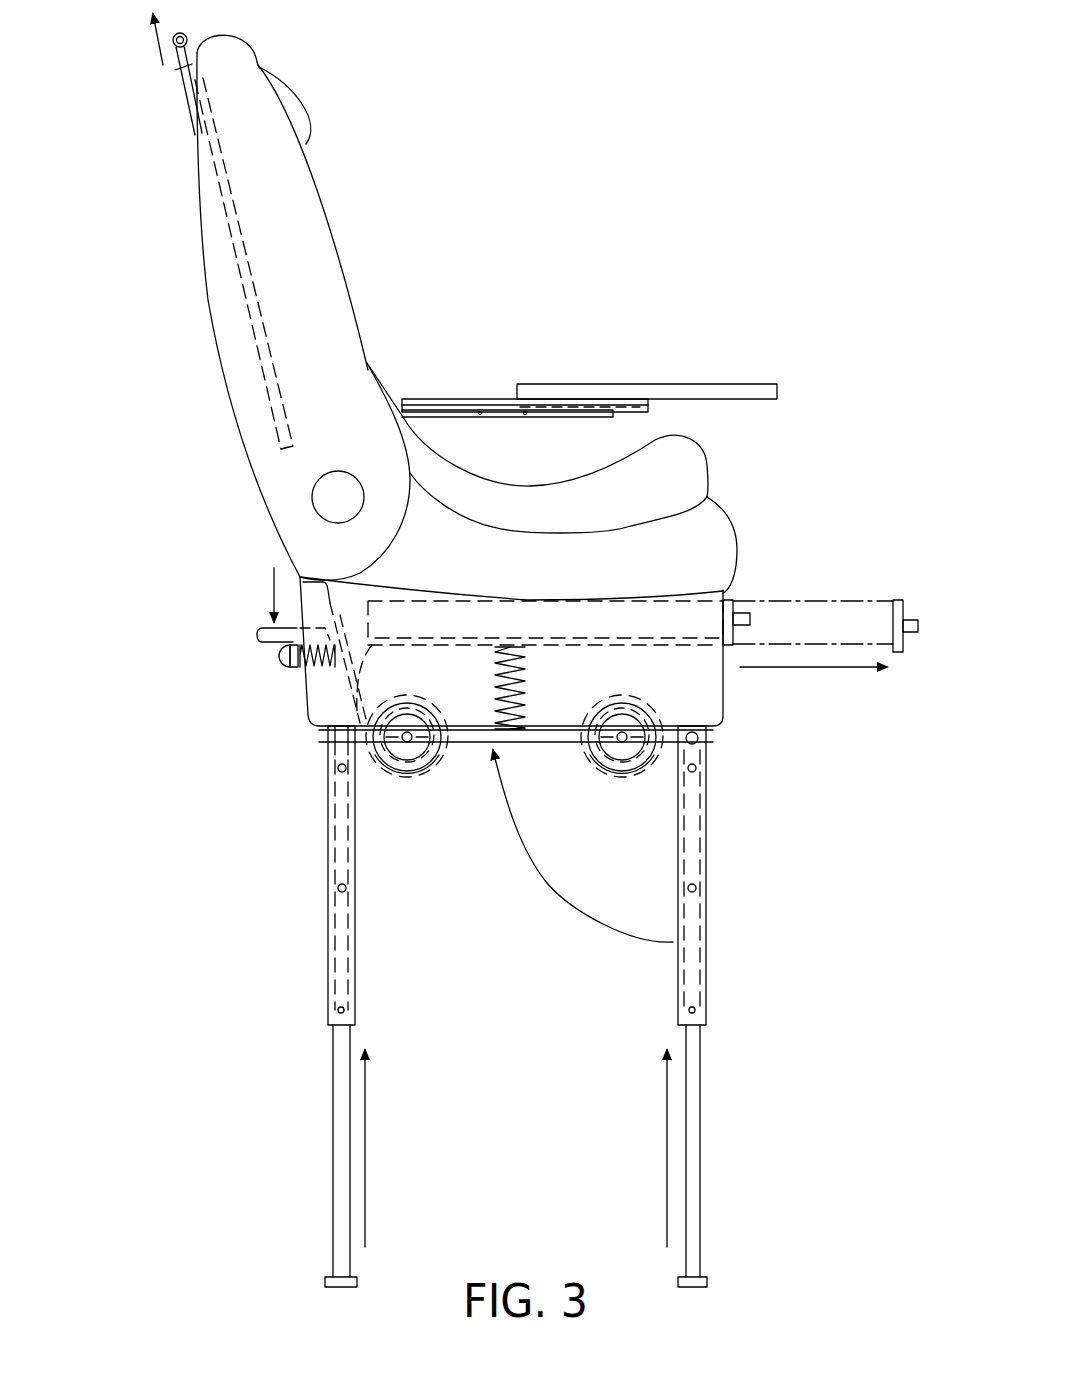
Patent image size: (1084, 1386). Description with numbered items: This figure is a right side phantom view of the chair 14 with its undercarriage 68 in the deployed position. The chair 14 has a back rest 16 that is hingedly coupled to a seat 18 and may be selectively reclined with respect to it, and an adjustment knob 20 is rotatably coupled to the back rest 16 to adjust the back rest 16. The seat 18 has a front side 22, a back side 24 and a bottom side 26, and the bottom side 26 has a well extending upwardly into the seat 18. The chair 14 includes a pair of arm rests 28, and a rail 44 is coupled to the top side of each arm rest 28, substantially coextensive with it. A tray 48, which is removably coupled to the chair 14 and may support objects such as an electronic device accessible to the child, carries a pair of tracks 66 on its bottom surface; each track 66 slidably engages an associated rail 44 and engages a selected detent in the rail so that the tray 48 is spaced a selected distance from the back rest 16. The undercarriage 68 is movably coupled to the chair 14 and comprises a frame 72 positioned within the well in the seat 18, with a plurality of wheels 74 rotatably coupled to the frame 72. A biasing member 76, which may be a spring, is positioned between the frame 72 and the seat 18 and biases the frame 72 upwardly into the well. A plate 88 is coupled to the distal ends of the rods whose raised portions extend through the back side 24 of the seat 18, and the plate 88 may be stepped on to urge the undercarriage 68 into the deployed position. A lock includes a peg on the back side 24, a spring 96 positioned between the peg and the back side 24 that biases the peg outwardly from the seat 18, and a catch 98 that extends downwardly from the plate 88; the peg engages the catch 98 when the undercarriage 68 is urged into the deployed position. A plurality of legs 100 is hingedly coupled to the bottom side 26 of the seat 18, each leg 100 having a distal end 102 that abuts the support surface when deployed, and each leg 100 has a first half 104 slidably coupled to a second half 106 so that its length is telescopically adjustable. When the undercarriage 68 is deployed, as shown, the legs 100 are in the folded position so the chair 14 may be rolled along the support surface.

The chair 14 is at (460, 143).
The back rest 16 is at (204, 258).
The seat 18 is at (723, 673).
The adjustment knob 20 is at (338, 497).
The front side 22 is at (720, 698).
The back side 24 is at (310, 720).
The bottom side 26 is at (473, 742).
The arm rests 28 is at (713, 448).
The rails 44 is at (440, 398).
The tray 48 is at (742, 385).
The tracks 66 is at (630, 400).
The undercarriage 68 is at (380, 793).
The frame 72 is at (530, 743).
The wheels 74 is at (408, 773).
The biasing member 76 is at (498, 682).
The plate 88 is at (262, 630).
The spring 96 is at (320, 667).
The catch 98 is at (288, 668).
The legs 100 is at (680, 1000).
The distal end 102 is at (345, 1263).
The first half 104 is at (330, 957).
The second half 106 is at (333, 1117).